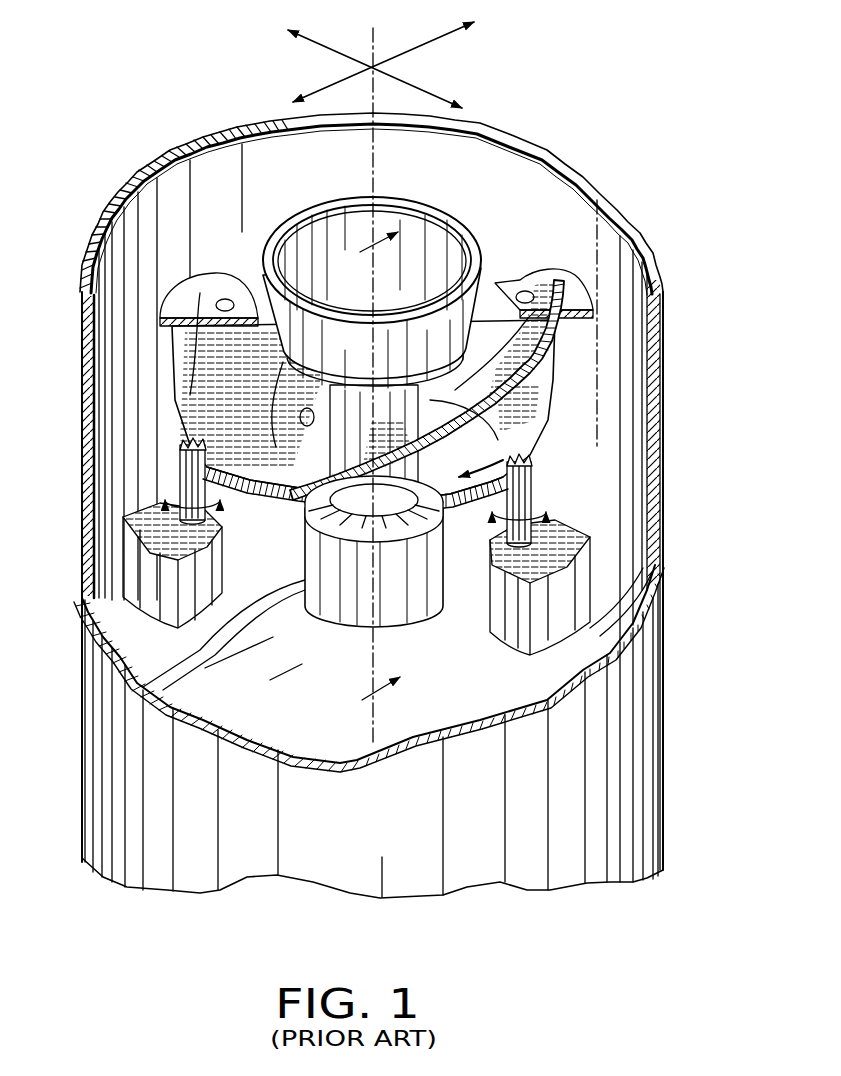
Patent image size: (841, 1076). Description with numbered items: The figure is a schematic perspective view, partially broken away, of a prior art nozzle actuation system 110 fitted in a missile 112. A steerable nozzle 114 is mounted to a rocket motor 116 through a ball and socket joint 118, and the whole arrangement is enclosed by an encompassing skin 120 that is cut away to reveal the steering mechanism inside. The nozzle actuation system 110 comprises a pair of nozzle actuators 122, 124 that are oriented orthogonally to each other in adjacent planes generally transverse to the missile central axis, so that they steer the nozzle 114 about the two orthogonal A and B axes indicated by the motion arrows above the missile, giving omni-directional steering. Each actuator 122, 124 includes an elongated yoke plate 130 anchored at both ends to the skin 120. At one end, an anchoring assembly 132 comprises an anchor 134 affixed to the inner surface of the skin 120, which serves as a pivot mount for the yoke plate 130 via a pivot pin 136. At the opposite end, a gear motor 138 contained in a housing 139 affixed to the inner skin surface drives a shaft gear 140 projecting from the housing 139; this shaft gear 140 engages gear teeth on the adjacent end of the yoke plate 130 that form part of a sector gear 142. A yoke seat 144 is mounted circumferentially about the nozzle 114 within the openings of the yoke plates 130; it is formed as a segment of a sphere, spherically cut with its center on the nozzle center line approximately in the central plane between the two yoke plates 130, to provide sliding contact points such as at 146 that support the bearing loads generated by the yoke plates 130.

The nozzle actuation system 110 is at (397, 460).
The missile 112 is at (672, 746).
The steerable nozzle 114 is at (286, 218).
The rocket motor 116 is at (478, 672).
The ball and socket joint 118 is at (335, 617).
The skin 120 is at (650, 206).
The nozzle actuator 122 is at (541, 361).
The nozzle actuator 124 is at (468, 510).
The yoke plate 130 is at (550, 343).
The anchoring assembly 132 is at (553, 263).
The anchor 134 is at (178, 285).
The pivot pin 136 is at (225, 300).
The gear motor 138 is at (155, 610).
The housing 139 is at (597, 568).
The shaft gear 140 is at (382, 492).
The sector gear 142 is at (545, 470).
The yoke seat 144 is at (375, 420).
The sliding contact point 146 is at (200, 416).